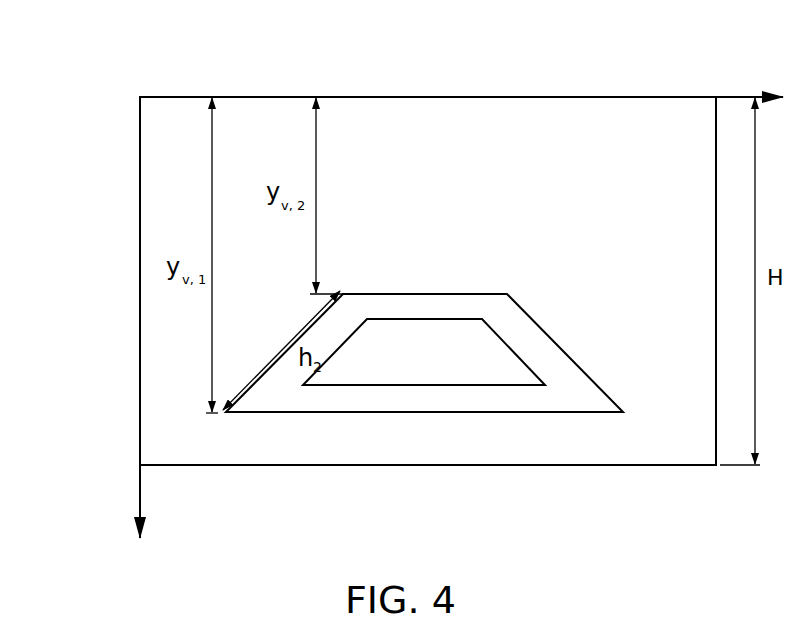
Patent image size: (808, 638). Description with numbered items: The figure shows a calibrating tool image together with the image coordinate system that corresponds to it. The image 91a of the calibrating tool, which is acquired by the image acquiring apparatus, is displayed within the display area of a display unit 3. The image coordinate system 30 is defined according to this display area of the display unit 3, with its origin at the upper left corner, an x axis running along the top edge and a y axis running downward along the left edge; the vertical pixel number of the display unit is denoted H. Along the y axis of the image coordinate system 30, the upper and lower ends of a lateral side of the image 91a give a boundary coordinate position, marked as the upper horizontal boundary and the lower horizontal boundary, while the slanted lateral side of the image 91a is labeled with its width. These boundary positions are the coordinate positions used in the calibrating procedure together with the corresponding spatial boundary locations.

The display unit 3 is at (178, 93).
The image coordinate system 30 is at (698, 130).
The image of the calibrating tool 91a is at (469, 294).